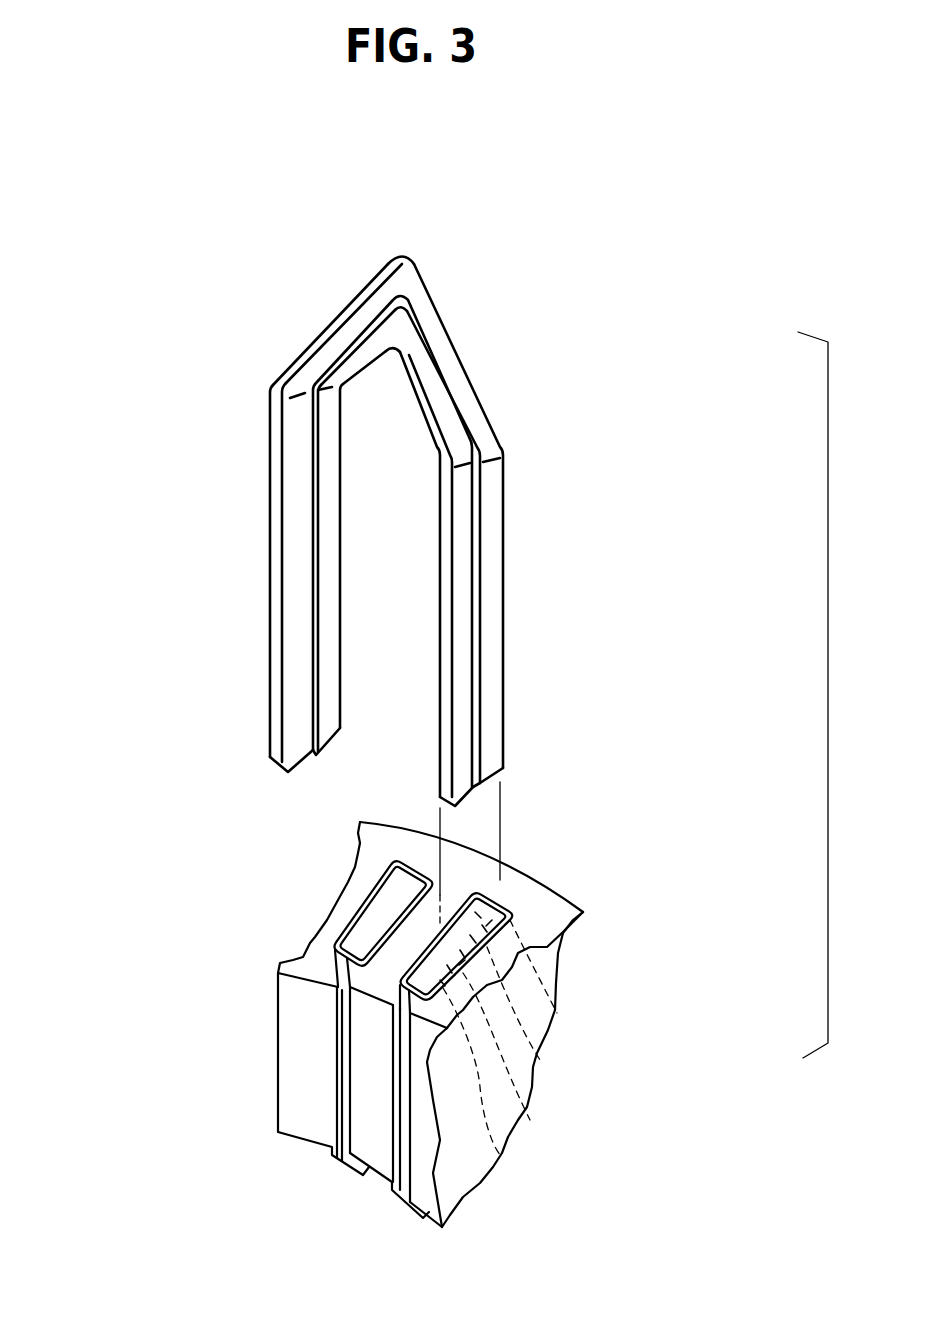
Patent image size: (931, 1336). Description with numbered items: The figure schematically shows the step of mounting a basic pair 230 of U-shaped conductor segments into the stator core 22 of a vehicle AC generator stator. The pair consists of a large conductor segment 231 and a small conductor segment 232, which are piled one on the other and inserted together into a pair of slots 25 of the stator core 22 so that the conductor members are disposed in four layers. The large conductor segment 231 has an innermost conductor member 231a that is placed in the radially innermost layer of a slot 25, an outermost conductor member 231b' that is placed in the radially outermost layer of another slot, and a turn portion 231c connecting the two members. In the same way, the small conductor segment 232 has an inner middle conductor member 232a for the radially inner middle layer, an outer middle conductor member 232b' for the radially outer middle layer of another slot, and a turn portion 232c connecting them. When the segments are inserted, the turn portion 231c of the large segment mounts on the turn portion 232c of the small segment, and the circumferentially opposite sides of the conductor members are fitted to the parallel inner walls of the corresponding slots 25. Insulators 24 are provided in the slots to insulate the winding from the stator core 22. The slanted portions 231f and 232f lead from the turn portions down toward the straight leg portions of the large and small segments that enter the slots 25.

The stator core 22 is at (556, 905).
The insulator 24 is at (505, 888).
The slot 25 is at (347, 1060).
The basic pair 230 is at (537, 367).
The large conductor segment 231 is at (448, 350).
The innermost conductor member 231a is at (502, 1157).
The outermost conductor member 231b' is at (616, 984).
The turn portion 231c is at (408, 268).
The slanted portion of large segment 231f is at (343, 330).
The small conductor segment 232 is at (460, 440).
The inner middle conductor member 232a is at (530, 1120).
The straight portion of small segment 232b' is at (591, 1025).
The turn portion 232c is at (402, 310).
The slanted portion of small segment 232f is at (345, 370).